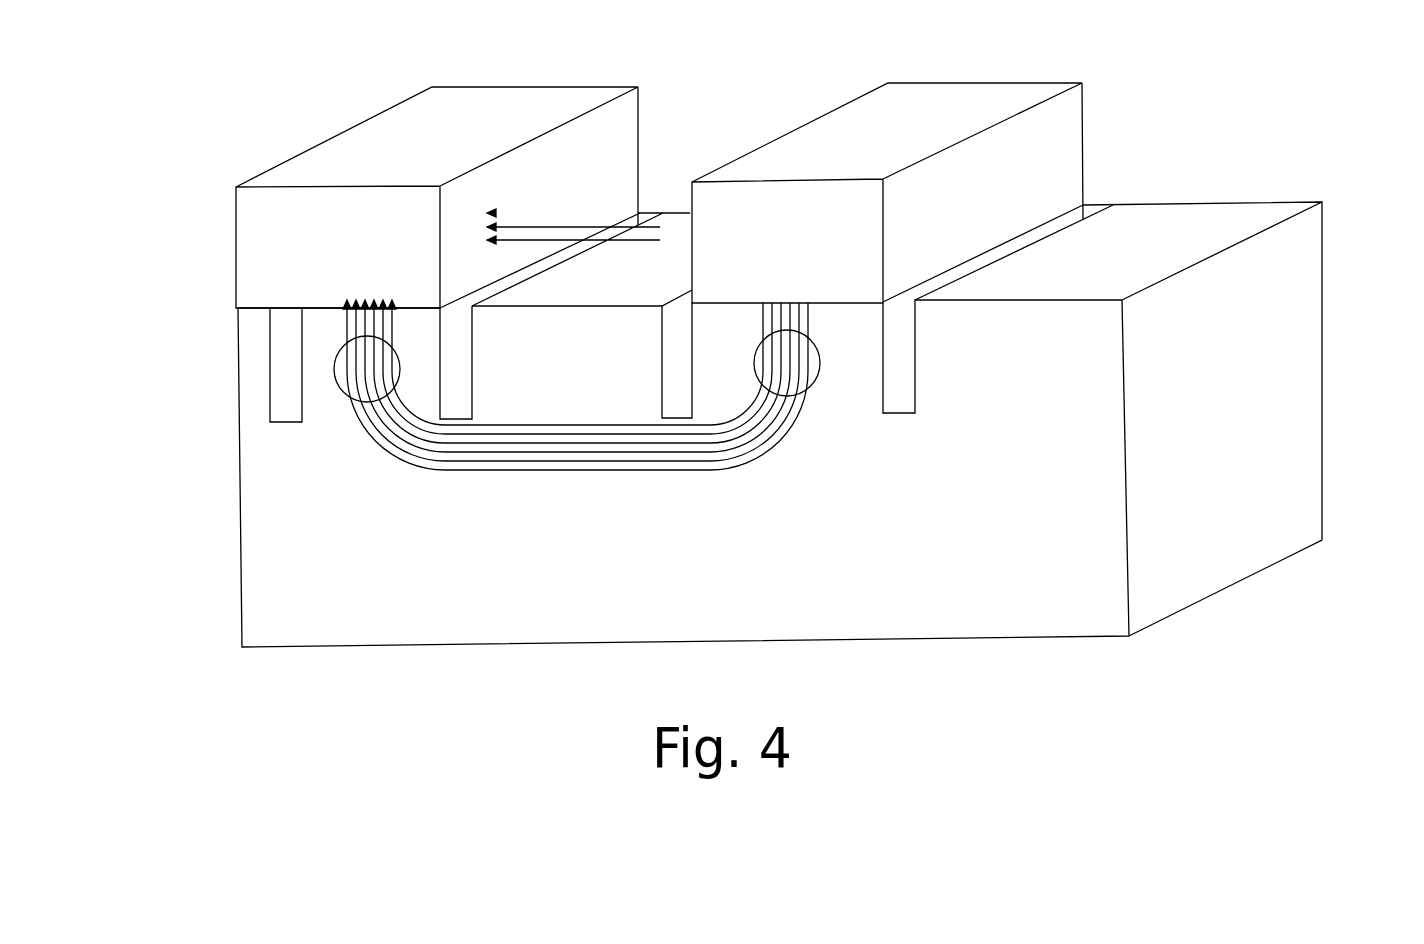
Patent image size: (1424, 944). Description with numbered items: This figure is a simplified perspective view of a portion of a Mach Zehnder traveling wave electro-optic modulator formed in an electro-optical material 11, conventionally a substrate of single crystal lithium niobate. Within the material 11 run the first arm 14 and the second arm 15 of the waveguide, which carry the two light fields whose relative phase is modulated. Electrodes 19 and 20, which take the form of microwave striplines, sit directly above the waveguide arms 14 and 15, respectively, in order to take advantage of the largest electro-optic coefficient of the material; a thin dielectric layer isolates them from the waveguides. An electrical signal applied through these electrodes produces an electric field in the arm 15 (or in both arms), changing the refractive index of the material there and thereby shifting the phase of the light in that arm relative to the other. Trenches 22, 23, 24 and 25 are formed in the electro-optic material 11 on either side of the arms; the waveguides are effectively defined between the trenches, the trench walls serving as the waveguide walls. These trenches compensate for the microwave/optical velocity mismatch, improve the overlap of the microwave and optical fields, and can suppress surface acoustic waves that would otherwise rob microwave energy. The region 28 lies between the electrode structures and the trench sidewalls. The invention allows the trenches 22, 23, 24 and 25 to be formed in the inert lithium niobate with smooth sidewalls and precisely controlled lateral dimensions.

The electro-optical material 11 is at (248, 429).
The first arm 14 is at (347, 372).
The second arm 15 is at (800, 387).
The electrode 19 is at (257, 242).
The electrode 20 is at (1040, 152).
The trench 22 is at (282, 343).
The trench 23 is at (460, 375).
The trench 24 is at (678, 387).
The trench 25 is at (910, 323).
The gap 28 is at (672, 235).